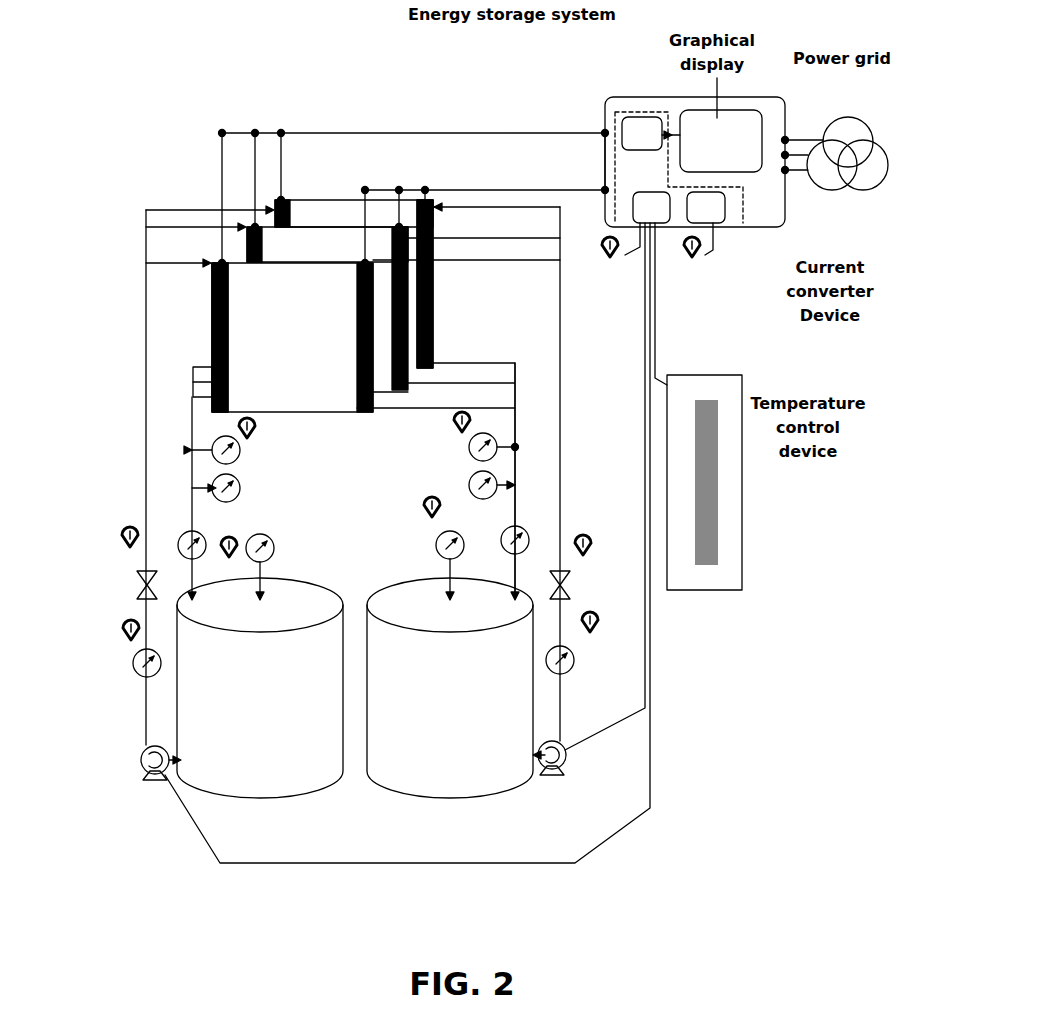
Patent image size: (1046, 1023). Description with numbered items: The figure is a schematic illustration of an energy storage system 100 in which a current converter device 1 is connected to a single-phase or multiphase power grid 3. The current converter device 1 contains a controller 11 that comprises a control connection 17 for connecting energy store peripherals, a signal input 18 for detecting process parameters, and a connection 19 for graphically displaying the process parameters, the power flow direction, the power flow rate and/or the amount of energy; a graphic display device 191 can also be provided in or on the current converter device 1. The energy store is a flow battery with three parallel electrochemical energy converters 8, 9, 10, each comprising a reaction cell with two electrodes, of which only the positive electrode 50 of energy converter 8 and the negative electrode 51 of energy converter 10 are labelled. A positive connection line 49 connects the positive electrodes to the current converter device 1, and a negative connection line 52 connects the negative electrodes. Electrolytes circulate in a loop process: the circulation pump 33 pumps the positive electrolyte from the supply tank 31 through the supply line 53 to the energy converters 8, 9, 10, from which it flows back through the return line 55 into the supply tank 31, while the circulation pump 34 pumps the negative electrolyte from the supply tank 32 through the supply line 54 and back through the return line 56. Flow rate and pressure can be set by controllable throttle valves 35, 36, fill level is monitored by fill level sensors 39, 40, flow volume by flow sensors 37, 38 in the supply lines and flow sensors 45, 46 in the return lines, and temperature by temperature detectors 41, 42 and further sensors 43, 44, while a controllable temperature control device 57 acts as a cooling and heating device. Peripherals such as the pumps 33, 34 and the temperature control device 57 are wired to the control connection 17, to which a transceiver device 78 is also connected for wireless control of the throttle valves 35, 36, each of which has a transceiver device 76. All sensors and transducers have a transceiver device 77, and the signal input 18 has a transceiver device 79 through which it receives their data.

The energy storage system 100 is at (508, 76).
The current converter device 1 is at (695, 187).
The power grid 3 is at (850, 117).
The electrochemical energy converter 8 is at (292, 337).
The electrochemical energy converter 9 is at (327, 308).
The electrochemical energy converter 10 is at (354, 284).
The controller 11 is at (605, 168).
The control connection 17 is at (651, 207).
The signal input 18 is at (706, 207).
The connection for graphical display 19 is at (642, 133).
The graphic display device 191 is at (721, 141).
The supply tank 31 is at (255, 776).
The supply tank 32 is at (415, 776).
The circulation pump 33 is at (142, 752).
The circulation pump 34 is at (565, 745).
The controllable throttle valve 35 is at (140, 578).
The controllable throttle valve 36 is at (570, 575).
The flow sensor 37 is at (133, 660).
The flow sensor 38 is at (574, 661).
The fill level sensor 39 is at (271, 541).
The fill level sensor 40 is at (436, 543).
The temperature detector 41 is at (240, 449).
The temperature detector 42 is at (469, 447).
The flow meter 43 is at (240, 487).
The flow meter 44 is at (469, 485).
The flow sensor 45 is at (204, 540).
The flow sensor 46 is at (502, 535).
The positive connection line 49 is at (385, 131).
The positive electrode 50 is at (212, 316).
The negative electrode 51 is at (433, 310).
The negative connection line 52 is at (395, 189).
The supply line 53 is at (146, 364).
The supply line 54 is at (560, 350).
The return line 55 is at (192, 420).
The return line 56 is at (515, 452).
The temperature control device 57 is at (742, 490).
The transceiver device 76 is at (123, 527).
The transceiver device 77 is at (255, 428).
The transceiver device 78 is at (613, 262).
The transceiver device 79 is at (695, 262).